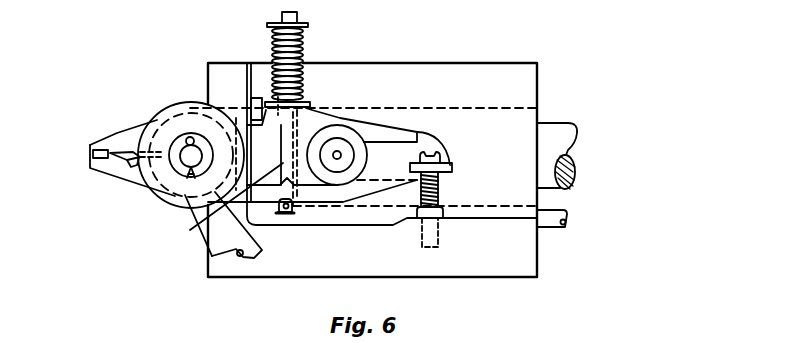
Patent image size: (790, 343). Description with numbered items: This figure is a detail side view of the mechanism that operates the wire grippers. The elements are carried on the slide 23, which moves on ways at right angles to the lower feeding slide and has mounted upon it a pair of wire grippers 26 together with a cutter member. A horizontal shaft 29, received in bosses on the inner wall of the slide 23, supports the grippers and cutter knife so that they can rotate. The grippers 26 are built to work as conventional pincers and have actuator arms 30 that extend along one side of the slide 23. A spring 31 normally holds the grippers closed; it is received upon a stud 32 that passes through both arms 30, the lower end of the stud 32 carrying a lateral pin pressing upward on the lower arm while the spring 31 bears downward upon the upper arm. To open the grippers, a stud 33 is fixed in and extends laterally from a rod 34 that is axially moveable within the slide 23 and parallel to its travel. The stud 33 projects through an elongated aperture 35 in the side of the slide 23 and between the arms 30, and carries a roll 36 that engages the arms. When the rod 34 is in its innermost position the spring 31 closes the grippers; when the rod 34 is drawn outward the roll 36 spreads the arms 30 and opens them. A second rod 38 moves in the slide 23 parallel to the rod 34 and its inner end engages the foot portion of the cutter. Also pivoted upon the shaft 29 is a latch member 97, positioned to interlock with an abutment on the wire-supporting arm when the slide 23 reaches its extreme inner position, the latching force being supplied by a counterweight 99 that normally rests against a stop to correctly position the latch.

The slide 23 is at (470, 72).
The wire grippers 26 is at (103, 147).
The horizontal shaft 29 is at (191, 157).
The actuator arms 30 is at (382, 175).
The spring 31 is at (303, 50).
The stud 32 is at (223, 205).
The stud 33 is at (338, 150).
The rod 34 is at (558, 130).
The elongated aperture 35 is at (450, 147).
The roll 36 is at (388, 130).
The rod 38 is at (553, 222).
The latch member 97 is at (117, 170).
The counterweight 99 is at (220, 238).